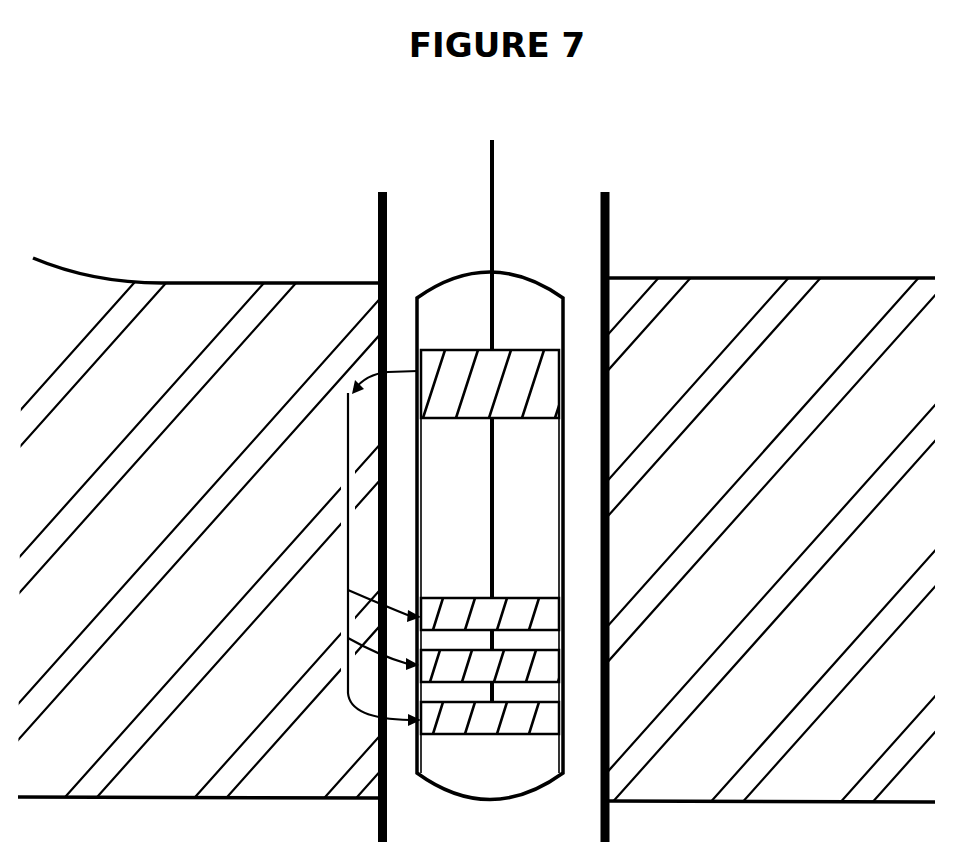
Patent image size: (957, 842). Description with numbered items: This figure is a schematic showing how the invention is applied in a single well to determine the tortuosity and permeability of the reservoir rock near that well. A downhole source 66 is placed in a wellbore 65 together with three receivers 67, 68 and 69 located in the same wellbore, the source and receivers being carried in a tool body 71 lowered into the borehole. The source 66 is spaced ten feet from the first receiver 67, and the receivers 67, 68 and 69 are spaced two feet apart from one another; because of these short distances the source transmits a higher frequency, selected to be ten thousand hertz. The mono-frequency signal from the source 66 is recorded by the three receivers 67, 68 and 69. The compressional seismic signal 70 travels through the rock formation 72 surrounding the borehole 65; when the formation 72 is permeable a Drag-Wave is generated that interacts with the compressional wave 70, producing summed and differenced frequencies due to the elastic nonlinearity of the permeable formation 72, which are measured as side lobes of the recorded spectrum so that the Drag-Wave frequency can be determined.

The wellbore 65 is at (553, 223).
The downhole source 66 is at (543, 397).
The receiver 67 is at (543, 615).
The receiver 68 is at (540, 665).
The receiver 69 is at (543, 723).
The compressional seismic signal 70 is at (348, 545).
The tool body 71 is at (533, 533).
The rock formation 72 is at (478, 530).